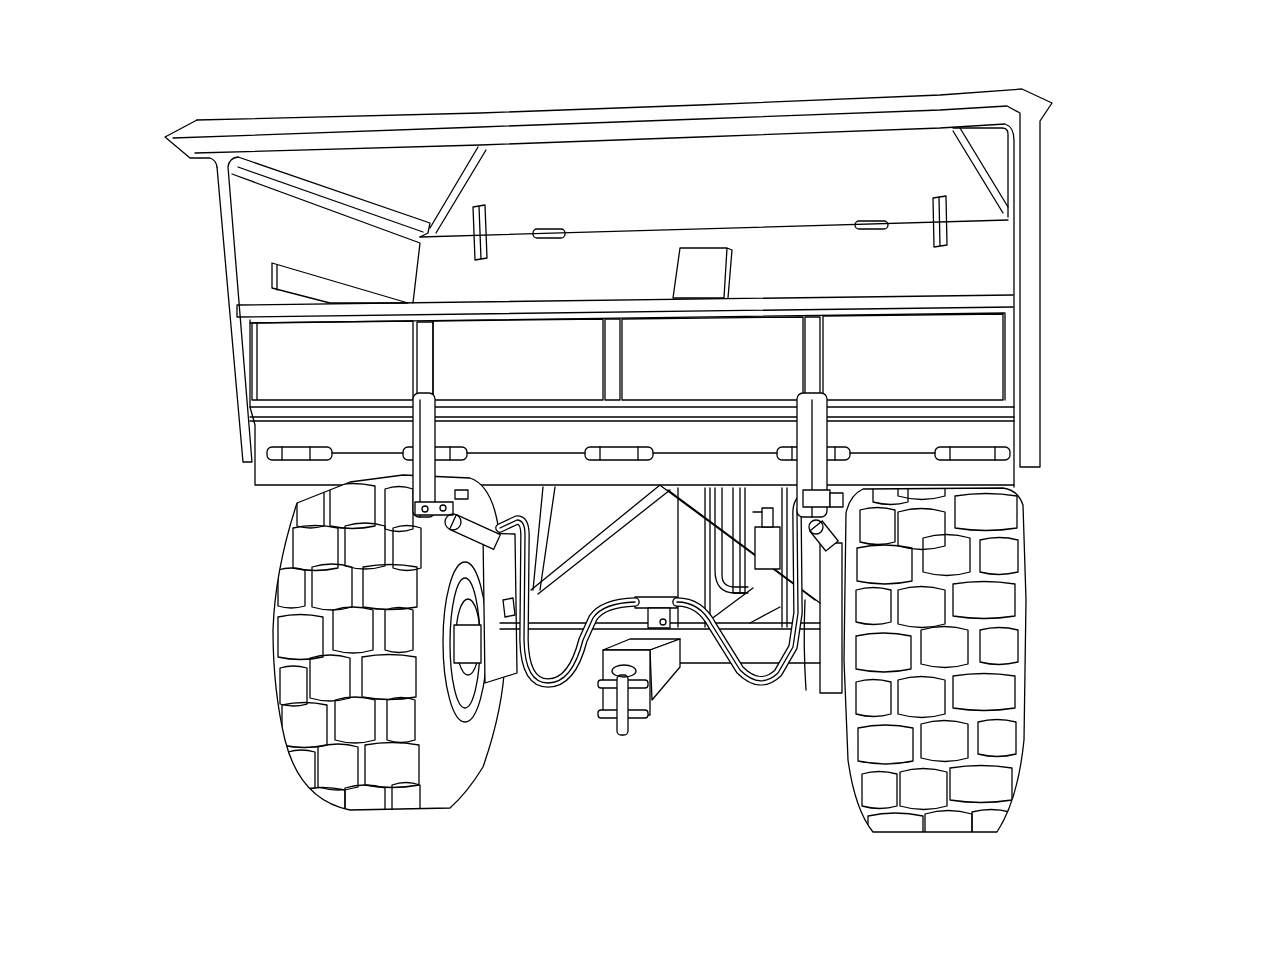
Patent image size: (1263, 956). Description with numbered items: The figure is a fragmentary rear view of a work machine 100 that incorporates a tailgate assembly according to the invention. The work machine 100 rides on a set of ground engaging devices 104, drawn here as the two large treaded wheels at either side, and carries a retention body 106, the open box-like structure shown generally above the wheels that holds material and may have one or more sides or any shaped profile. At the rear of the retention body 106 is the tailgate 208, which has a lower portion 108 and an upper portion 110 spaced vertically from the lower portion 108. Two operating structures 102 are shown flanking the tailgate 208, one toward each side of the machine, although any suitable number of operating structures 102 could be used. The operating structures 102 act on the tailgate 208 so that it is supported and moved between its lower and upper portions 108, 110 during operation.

The work machine 100 is at (702, 465).
The operating structure 102 is at (413, 467).
The ground engaging devices 104 is at (280, 585).
The retention body 106 is at (467, 287).
The lower portion 108 is at (980, 428).
The upper portion 110 is at (980, 348).
The tailgate 208 is at (720, 371).